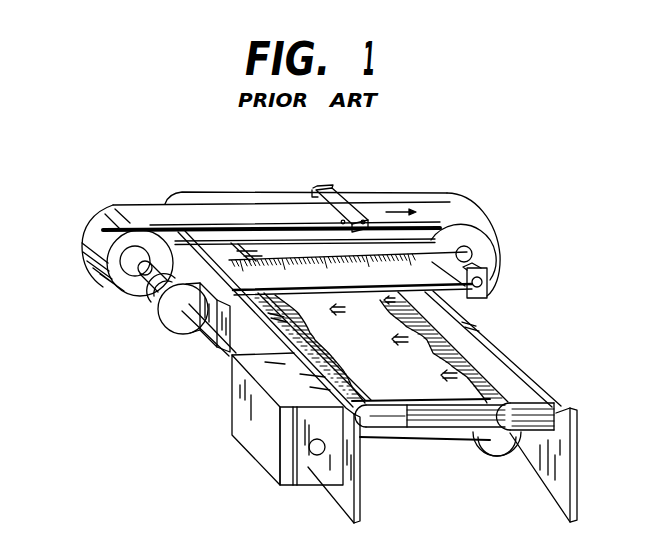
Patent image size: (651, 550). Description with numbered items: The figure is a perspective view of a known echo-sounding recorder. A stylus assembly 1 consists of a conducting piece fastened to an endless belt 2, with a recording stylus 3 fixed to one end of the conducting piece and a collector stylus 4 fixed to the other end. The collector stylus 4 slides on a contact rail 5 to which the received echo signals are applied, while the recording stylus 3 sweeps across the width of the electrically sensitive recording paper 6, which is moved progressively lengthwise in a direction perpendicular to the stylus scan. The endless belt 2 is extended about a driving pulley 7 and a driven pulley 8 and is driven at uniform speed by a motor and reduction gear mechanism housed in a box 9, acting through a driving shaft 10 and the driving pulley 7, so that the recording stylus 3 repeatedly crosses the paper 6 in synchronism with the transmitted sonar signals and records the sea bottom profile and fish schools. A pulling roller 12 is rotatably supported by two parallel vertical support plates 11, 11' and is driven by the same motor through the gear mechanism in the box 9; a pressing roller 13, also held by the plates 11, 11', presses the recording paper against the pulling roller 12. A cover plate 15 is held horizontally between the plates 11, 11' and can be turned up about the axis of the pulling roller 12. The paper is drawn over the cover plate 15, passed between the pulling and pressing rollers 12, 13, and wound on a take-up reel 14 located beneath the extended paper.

The stylus assembly 1 is at (332, 181).
The endless belt 2 is at (88, 227).
The recording stylus 3 is at (338, 248).
The collector stylus 4 is at (312, 192).
The contact rail 5 is at (217, 199).
The recording paper 6 is at (503, 373).
The driving pulley 7 is at (128, 283).
The driven pulley 8 is at (487, 246).
The box 9 is at (258, 447).
The driving shaft 10 is at (210, 346).
The vertical support plate 11 is at (565, 465).
The vertical support plate 11' is at (321, 473).
The pulling roller 12 is at (533, 393).
The pressing roller 13 is at (547, 415).
The take-up reel 14 is at (493, 444).
The cover plate 15 is at (497, 353).